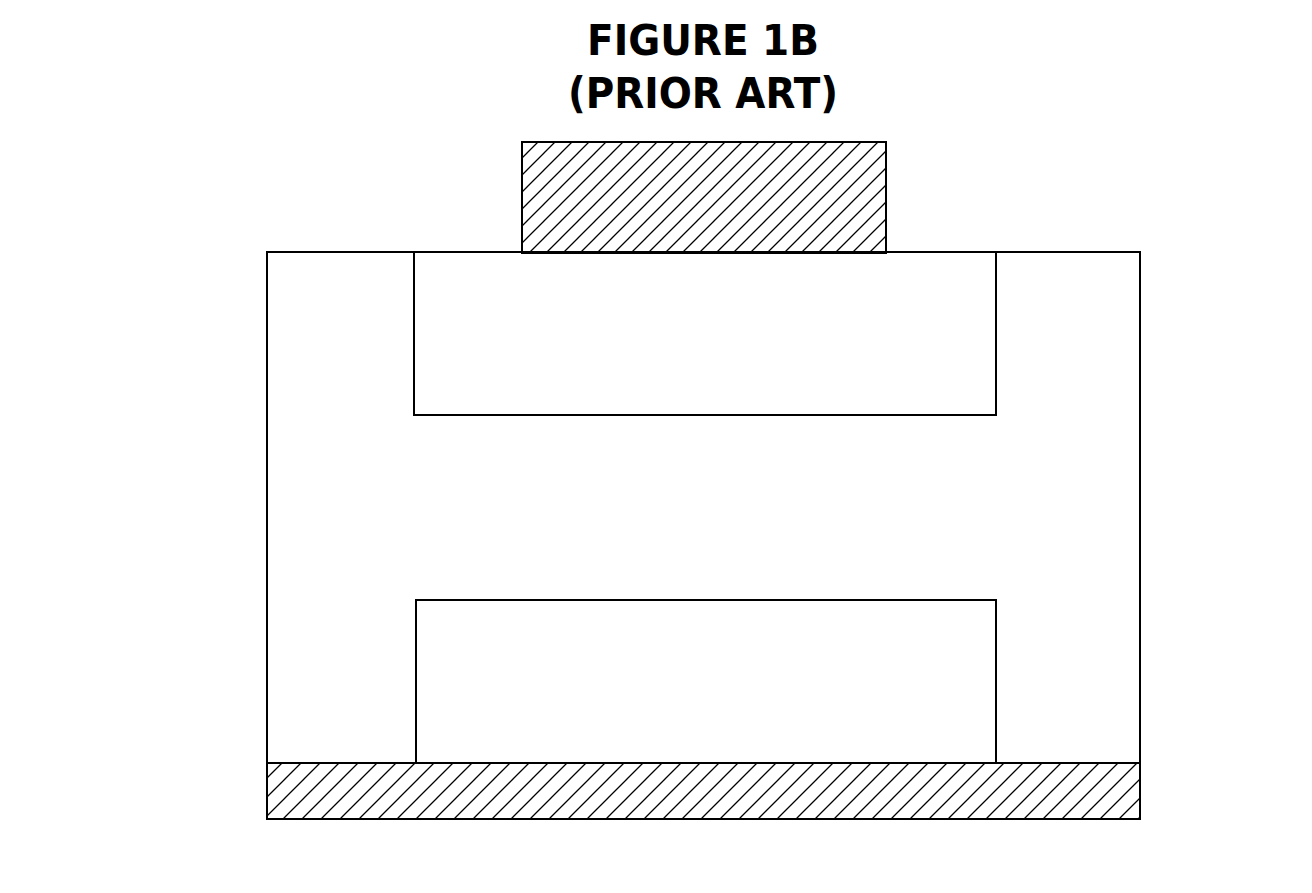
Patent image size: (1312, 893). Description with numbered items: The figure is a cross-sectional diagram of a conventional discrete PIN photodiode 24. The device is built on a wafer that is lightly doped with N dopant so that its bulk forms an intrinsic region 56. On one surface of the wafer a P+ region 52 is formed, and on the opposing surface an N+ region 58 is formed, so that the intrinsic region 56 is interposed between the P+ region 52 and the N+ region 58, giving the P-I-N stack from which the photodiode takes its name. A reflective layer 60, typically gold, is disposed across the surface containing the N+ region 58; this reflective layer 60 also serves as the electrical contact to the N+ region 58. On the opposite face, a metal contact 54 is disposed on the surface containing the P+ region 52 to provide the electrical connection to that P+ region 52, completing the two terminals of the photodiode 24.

The discrete PIN photodiode 24 is at (1197, 162).
The P+ region 52 is at (485, 272).
The metal contact 54 is at (850, 213).
The intrinsic region 56 is at (1121, 487).
The N+ region 58 is at (452, 673).
The reflective layer 60 is at (1105, 797).